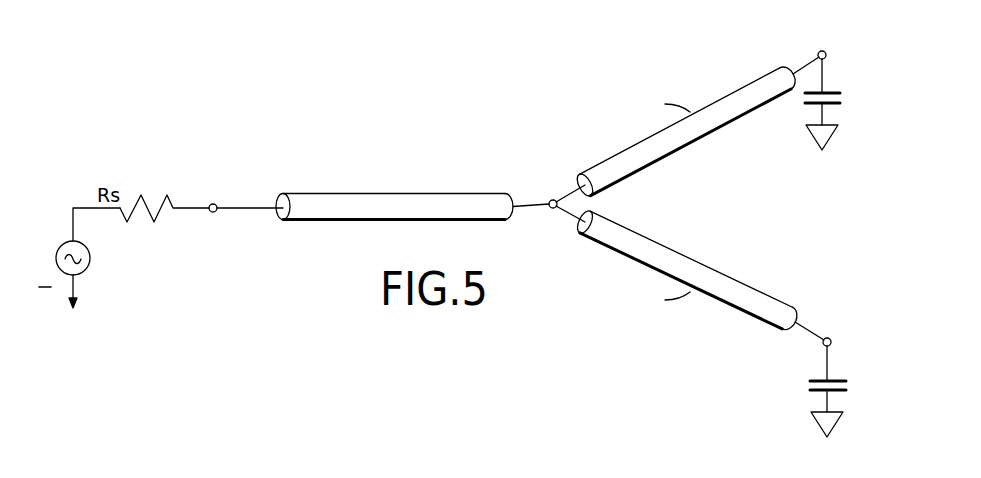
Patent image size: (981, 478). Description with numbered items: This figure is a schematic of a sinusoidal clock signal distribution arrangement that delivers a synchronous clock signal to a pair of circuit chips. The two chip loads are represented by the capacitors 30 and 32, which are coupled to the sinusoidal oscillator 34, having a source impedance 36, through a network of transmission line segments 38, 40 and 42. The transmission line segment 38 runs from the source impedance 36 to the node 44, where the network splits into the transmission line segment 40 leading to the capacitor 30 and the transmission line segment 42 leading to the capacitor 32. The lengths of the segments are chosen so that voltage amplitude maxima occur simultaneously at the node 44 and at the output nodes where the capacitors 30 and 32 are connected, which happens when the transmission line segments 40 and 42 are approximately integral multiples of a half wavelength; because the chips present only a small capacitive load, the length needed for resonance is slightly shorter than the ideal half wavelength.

The capacitor 30 is at (831, 92).
The capacitor 32 is at (813, 392).
The sinusoidal oscillator 34 is at (84, 270).
The source impedance 36 is at (168, 197).
The transmission line segment 38 is at (304, 221).
The transmission line segment 40 is at (711, 132).
The transmission line segment 42 is at (742, 282).
The node 44 is at (552, 209).